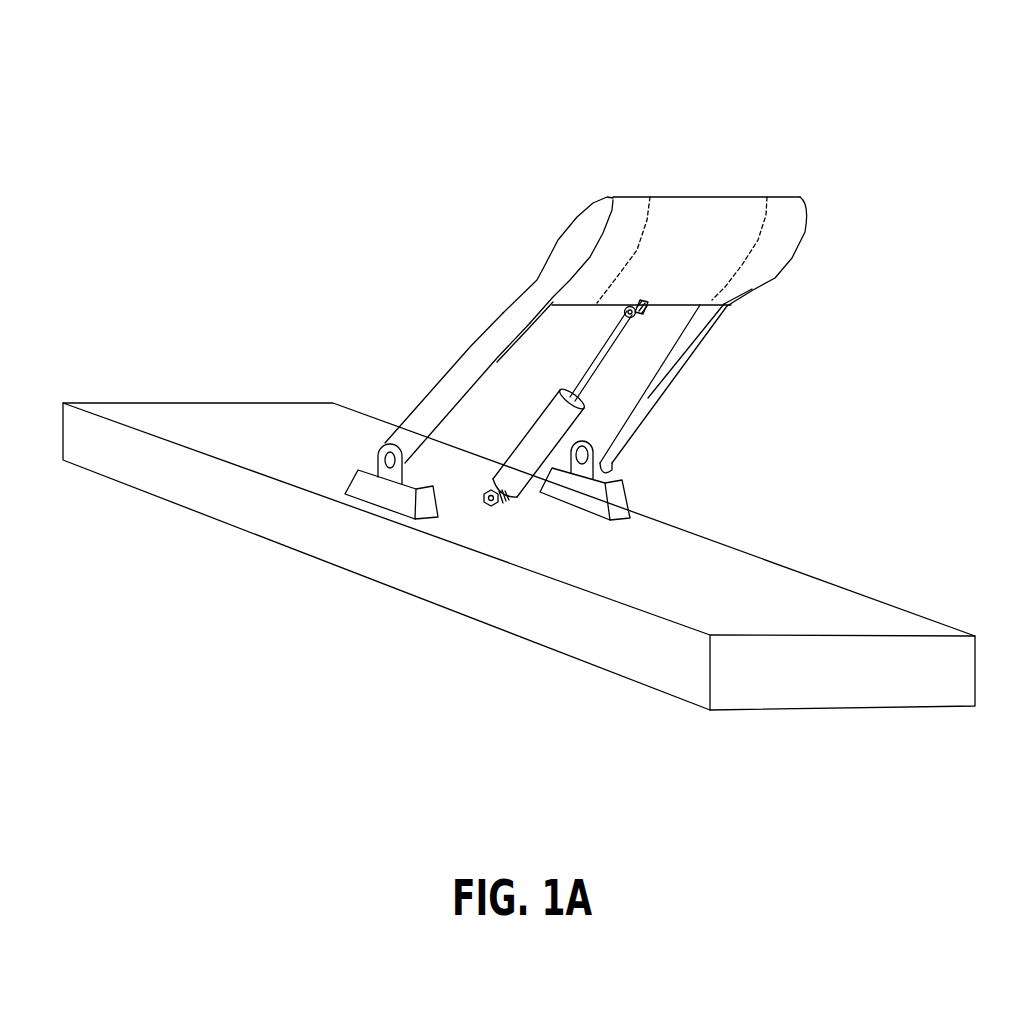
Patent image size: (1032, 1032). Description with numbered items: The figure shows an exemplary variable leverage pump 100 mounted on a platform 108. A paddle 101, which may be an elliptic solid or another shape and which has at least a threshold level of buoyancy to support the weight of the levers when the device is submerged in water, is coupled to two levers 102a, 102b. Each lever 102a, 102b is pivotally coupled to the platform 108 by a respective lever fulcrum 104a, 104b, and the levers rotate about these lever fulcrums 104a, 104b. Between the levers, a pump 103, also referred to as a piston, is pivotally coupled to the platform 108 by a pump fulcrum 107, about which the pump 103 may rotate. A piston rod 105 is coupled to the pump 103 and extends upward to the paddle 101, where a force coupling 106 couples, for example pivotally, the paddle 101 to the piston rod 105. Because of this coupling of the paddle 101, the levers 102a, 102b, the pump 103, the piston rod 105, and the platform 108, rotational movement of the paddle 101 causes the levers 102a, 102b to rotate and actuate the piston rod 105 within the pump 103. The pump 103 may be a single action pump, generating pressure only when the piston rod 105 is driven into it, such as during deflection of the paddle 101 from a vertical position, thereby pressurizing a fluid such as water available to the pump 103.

The variable leverage pump 100 is at (538, 50).
The paddle 101 is at (789, 264).
The lever 102a is at (478, 335).
The lever 102b is at (700, 360).
The pump 103 is at (530, 415).
The lever fulcrum 104a is at (373, 455).
The lever fulcrum 104b is at (606, 462).
The piston rod 105 is at (594, 353).
The force coupling 106 is at (645, 314).
The pump fulcrum 107 is at (507, 499).
The platform 108 is at (702, 533).